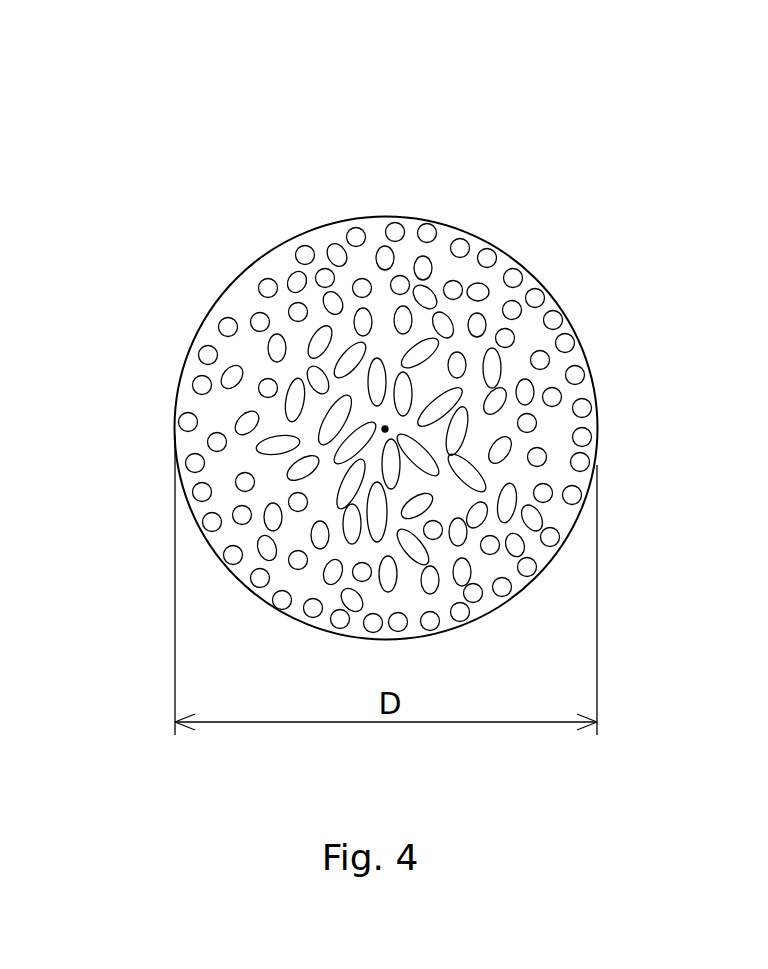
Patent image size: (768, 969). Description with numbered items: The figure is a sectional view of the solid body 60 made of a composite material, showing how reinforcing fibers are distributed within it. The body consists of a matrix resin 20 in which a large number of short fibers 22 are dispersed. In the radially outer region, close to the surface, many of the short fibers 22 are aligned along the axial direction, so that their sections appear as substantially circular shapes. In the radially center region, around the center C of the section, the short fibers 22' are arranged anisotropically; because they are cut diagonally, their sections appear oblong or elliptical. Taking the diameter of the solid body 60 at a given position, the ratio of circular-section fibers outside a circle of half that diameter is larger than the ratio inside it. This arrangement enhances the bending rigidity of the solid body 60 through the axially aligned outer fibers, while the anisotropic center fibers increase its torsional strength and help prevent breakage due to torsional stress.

The solid body 60 is at (365, 190).
The matrix resin 20 is at (330, 236).
The short fibers 22 is at (339, 378).
The short fibers 22' is at (486, 461).
The center of body C is at (385, 430).